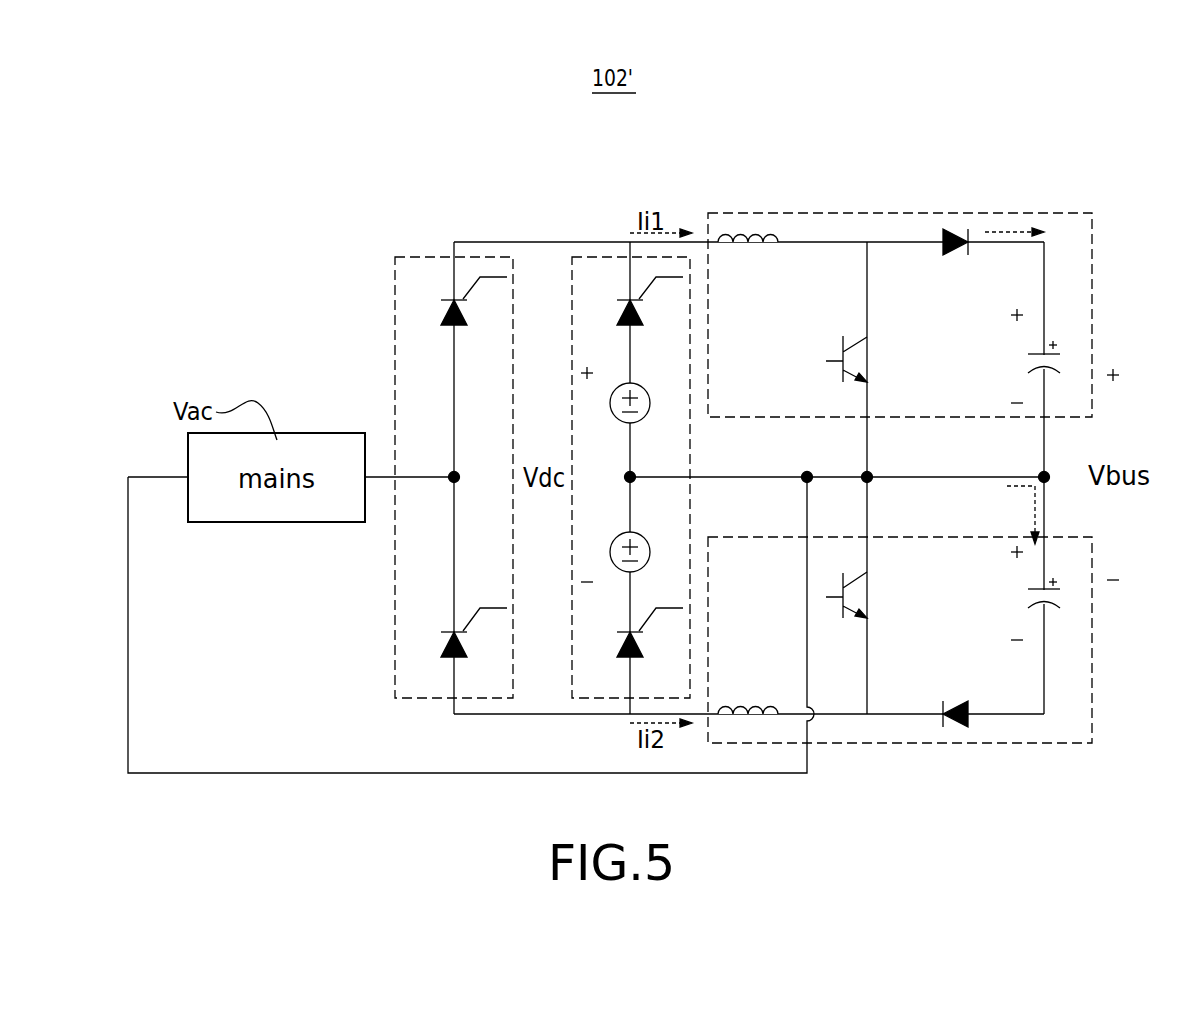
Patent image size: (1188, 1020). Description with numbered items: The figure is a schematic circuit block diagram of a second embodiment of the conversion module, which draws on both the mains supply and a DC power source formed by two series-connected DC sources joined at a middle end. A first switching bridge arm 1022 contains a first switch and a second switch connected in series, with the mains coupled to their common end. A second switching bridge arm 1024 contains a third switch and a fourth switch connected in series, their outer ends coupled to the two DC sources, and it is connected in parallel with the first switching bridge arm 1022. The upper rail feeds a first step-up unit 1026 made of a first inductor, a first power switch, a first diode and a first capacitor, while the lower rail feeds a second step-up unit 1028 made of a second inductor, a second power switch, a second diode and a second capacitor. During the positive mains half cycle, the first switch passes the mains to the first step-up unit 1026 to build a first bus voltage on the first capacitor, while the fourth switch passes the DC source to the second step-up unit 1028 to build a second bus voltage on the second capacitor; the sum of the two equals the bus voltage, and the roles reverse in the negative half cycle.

The first switching bridge arm 1022 is at (426, 264).
The second switching bridge arm 1024 is at (602, 262).
The first step-up unit 1026 is at (1063, 220).
The second step-up unit 1028 is at (1062, 738).